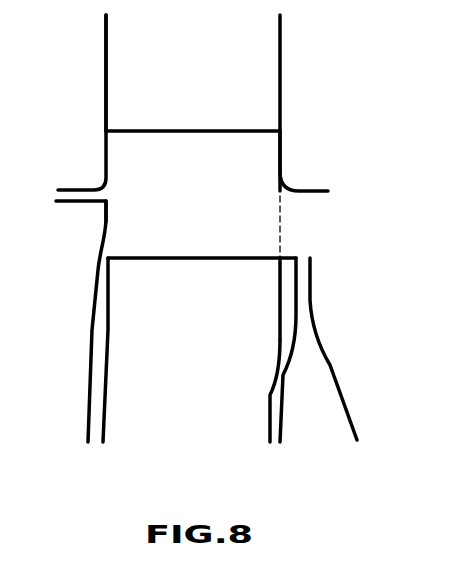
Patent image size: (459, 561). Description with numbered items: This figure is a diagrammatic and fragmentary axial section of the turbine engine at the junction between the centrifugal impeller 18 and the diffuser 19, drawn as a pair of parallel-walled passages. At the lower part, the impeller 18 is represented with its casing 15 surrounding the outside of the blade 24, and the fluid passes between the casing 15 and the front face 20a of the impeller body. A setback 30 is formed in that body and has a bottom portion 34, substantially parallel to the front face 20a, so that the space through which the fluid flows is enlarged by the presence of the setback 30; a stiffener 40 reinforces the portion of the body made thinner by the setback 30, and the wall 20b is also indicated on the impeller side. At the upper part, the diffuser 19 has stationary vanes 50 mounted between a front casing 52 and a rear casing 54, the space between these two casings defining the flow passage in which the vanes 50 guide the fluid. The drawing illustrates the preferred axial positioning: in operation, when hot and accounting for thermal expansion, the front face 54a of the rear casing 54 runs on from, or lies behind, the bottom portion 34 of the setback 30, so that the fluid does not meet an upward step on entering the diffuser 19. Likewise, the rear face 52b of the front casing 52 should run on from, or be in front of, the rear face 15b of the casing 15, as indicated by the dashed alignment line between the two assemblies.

The casing 15 is at (97, 241).
The rear face of the casing 15b is at (108, 224).
The centrifugal impeller 18 is at (368, 341).
The diffuser 19 is at (326, 121).
The front face of the body 20a is at (270, 372).
The second channel wall 20b is at (282, 403).
The blade 24 is at (128, 383).
The setback 30 is at (256, 284).
The bottom portion 34 is at (277, 266).
The stiffener 40 is at (289, 298).
The stationary vane 50 is at (135, 92).
The front casing 52 is at (106, 42).
The rear face of the front casing 52b is at (107, 67).
The rear casing 54 is at (281, 38).
The front face of the rear casing 54a is at (274, 146).